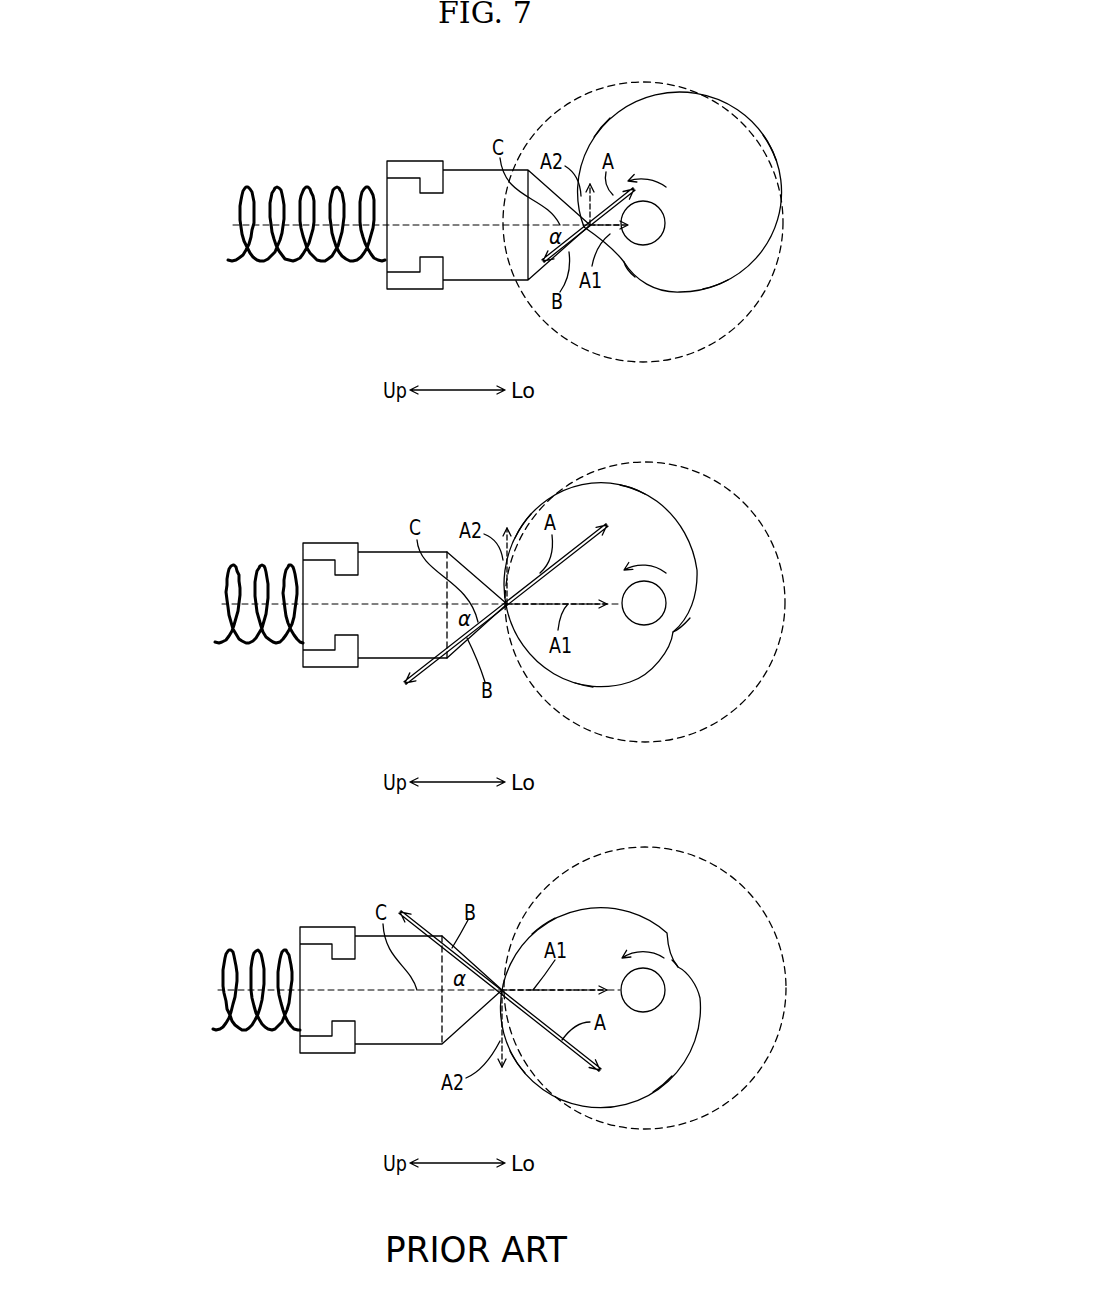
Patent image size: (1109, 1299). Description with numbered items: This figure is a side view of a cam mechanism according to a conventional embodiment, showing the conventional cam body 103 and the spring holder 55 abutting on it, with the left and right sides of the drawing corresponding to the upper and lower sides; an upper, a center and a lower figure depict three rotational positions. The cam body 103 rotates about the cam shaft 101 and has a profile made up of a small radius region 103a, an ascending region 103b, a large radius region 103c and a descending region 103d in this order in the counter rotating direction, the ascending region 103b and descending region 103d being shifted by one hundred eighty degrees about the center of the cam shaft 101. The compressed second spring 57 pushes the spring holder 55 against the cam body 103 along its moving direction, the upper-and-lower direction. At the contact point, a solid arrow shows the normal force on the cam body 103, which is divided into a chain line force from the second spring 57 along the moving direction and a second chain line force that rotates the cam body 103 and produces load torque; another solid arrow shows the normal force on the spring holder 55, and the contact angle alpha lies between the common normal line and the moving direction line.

The spring holder 55 is at (460, 170).
The second spring 57 is at (335, 187).
The cam shaft 101 is at (650, 222).
The cam body 103 is at (716, 102).
The small radius region 103a is at (626, 262).
The ascending region 103b is at (603, 125).
The large radius region 103c is at (769, 148).
The descending region 103d is at (716, 290).